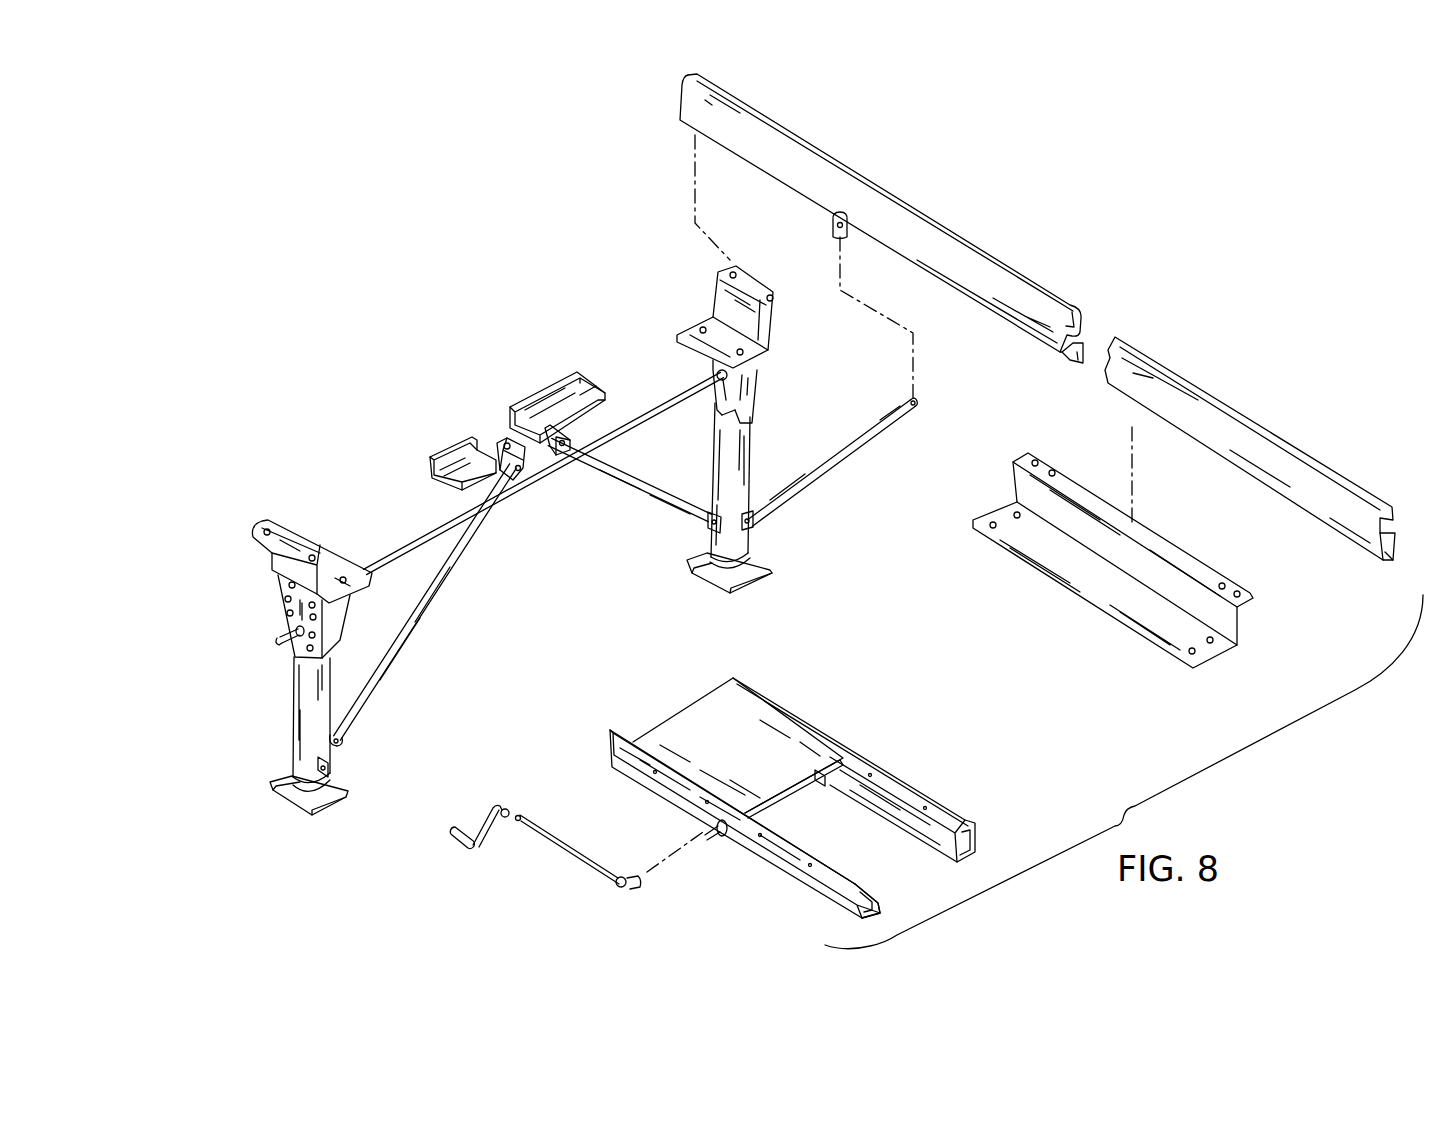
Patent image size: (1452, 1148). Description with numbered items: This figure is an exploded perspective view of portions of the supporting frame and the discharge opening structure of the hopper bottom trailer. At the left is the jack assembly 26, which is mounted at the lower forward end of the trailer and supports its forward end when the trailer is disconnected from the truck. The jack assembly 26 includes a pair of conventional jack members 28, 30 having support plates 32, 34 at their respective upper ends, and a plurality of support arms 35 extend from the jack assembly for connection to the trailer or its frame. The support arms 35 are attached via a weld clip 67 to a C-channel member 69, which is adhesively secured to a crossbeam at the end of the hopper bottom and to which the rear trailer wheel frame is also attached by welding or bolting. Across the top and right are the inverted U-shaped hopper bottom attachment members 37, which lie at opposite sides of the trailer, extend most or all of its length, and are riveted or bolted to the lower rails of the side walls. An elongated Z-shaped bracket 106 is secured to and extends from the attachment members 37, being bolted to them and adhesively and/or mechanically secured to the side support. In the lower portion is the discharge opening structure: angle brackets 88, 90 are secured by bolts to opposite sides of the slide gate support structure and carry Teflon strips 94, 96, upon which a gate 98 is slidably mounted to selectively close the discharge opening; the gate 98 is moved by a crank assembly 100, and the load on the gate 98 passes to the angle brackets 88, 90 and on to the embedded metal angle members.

The jack assembly 26 is at (357, 758).
The jack member 28 is at (292, 718).
The jack member 30 is at (752, 440).
The support plate 32 is at (293, 543).
The support plate 34 is at (712, 298).
The support arms 35 is at (430, 598).
The hopper bottom attachment member 37 is at (998, 258).
The weld clip 67 is at (500, 440).
The C-channel member 69 is at (539, 386).
The angle bracket 88 is at (927, 790).
The angle bracket 90 is at (817, 872).
The Teflon strip 94 is at (977, 845).
The Teflon strip 96 is at (873, 890).
The gate 98 is at (758, 727).
The crank assembly 100 is at (578, 850).
The Z-shaped bracket 106 is at (1227, 620).